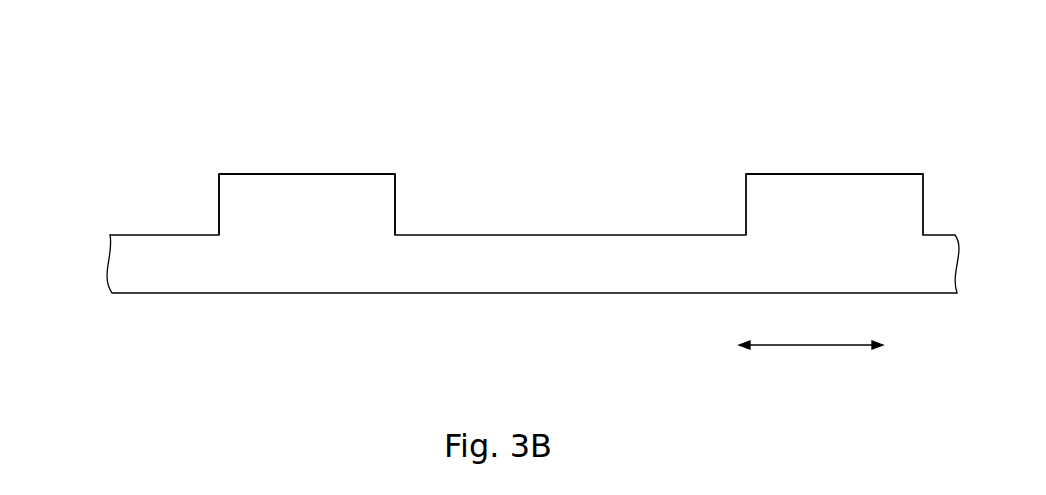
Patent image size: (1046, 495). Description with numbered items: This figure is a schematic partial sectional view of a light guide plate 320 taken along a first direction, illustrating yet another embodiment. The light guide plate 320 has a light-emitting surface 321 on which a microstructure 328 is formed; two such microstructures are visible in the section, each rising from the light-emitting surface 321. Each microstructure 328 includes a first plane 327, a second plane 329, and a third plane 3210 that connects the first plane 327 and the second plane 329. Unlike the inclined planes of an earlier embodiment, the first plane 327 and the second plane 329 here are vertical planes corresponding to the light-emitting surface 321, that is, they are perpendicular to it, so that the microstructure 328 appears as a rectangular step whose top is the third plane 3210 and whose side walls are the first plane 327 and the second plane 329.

The light guide plate 320 is at (72, 59).
The light-emitting surface 321 is at (275, 303).
The microstructure 328 is at (348, 195).
The third plane 3210 is at (274, 164).
The first plane 327 is at (208, 213).
The second plane 329 is at (407, 212).